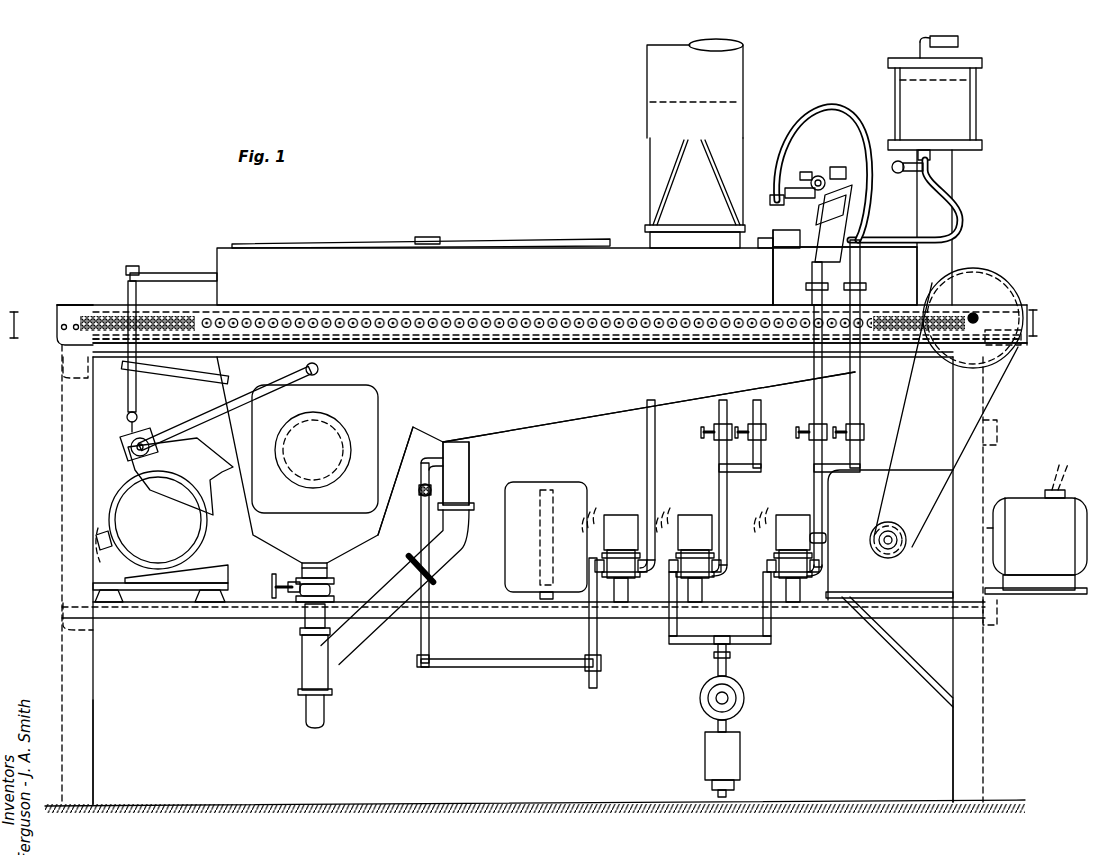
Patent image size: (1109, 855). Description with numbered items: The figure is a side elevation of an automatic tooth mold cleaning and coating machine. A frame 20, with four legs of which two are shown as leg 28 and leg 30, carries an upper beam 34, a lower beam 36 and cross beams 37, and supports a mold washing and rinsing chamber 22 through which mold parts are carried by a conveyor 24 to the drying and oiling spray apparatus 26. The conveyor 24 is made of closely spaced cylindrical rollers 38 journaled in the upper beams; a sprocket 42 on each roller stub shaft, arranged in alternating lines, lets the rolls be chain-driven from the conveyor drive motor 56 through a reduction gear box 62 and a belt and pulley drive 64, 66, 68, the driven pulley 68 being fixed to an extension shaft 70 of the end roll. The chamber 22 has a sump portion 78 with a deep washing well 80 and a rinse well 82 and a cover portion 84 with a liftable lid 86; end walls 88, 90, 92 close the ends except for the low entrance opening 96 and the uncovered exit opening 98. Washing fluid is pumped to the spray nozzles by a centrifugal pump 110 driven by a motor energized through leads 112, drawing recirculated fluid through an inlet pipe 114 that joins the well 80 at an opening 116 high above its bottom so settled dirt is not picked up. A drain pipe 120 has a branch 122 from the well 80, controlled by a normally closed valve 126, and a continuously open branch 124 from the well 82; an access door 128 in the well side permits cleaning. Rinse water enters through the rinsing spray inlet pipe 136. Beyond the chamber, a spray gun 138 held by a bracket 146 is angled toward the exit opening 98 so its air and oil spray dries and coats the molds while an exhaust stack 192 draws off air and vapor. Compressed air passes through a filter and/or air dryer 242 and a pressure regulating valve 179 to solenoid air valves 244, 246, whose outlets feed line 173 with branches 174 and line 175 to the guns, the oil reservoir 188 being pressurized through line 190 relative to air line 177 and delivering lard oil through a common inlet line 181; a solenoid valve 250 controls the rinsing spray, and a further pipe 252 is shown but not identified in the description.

The frame 20 is at (57, 345).
The mold washing and rinsing chamber 22 is at (575, 430).
The conveyor 24 is at (80, 315).
The drying and oiling spray apparatus 26 is at (826, 175).
The leg 28 is at (952, 741).
The leg 30 is at (93, 757).
The upper beam 34 is at (62, 305).
The lower beam 36 is at (152, 606).
The cross beam 37 is at (88, 376).
The cylindrical roller 38 is at (210, 318).
The sprocket 42 is at (113, 318).
The conveyor drive motor 56 is at (1036, 528).
The reduction gear box 62 is at (920, 605).
The belt and pulley drive 64 is at (892, 518).
The belt 66 is at (900, 432).
The driven pulley 68 is at (1012, 340).
The extension shaft 70 is at (978, 315).
The sump portion 78 is at (470, 448).
The well 80 is at (352, 537).
The well 82 is at (605, 420).
The cover portion 84 is at (238, 250).
The lid 86 is at (405, 241).
The end wall 88 is at (222, 402).
The end wall 90 is at (217, 262).
The end wall 92 is at (862, 370).
The entrance opening 96 is at (556, 307).
The exit opening 98 is at (775, 276).
The centrifugal pump 110 is at (190, 538).
The leads 112 is at (96, 528).
The inlet pipe 114 is at (213, 478).
The inlet opening 116 is at (226, 440).
The drain pipe 120 is at (330, 712).
The drain branch 122 is at (330, 598).
The drain branch 124 is at (470, 494).
The valve 126 is at (285, 575).
The access door 128 is at (335, 440).
The rinsing spray inlet pipe 136 is at (656, 478).
The spray gun 138 is at (858, 205).
The bracket 146 is at (758, 240).
The air line 173 is at (727, 552).
The branch 174 is at (808, 95).
The air line 175 is at (823, 519).
The air line 177 is at (727, 663).
The pressure regulating valve 179 is at (745, 697).
The common inlet line 181 is at (962, 198).
The reservoir 188 is at (962, 100).
The air line 190 is at (958, 42).
The exhaust stack 192 is at (745, 78).
The filter and/or air dryer 242 is at (742, 752).
The solenoid air valve 244 is at (693, 516).
The solenoid air valve 246 is at (791, 516).
The solenoid valve 250 is at (616, 516).
The pipe 252 is at (598, 639).